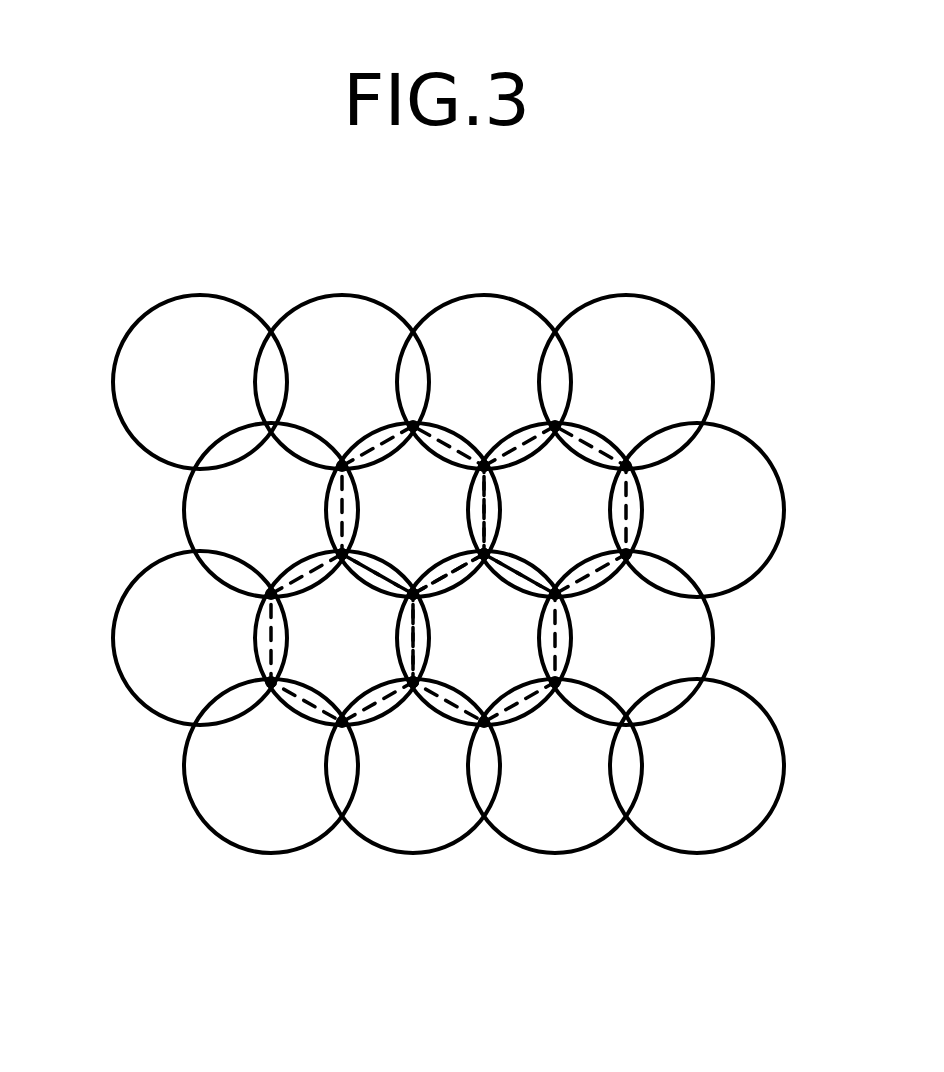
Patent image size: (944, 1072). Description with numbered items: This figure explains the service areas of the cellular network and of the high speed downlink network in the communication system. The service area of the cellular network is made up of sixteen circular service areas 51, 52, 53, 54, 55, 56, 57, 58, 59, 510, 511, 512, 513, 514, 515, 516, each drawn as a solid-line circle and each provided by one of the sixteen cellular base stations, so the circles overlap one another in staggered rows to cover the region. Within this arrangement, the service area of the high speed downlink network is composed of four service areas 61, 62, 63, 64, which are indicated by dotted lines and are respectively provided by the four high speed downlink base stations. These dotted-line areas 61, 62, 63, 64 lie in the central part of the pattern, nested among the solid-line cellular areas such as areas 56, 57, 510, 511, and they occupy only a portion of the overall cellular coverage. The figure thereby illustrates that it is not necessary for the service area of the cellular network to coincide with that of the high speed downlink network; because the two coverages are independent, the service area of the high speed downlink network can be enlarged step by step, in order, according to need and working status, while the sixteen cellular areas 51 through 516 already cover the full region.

The circular service area 51 is at (208, 295).
The circular service area 52 is at (345, 295).
The circular service area 53 is at (490, 295).
The circular service area 54 is at (630, 295).
The circular service area 55 is at (184, 507).
The circular service area 56 is at (355, 440).
The circular service area 57 is at (510, 427).
The circular service area 58 is at (777, 466).
The circular service area 59 is at (122, 688).
The circular service area 510 is at (378, 560).
The circular service area 511 is at (520, 560).
The circular service area 512 is at (676, 562).
The circular service area 513 is at (272, 856).
The circular service area 514 is at (417, 856).
The circular service area 515 is at (552, 856).
The circular service area 516 is at (753, 836).
The service area 61 is at (453, 427).
The service area 62 is at (593, 433).
The service area 63 is at (298, 710).
The service area 64 is at (440, 710).